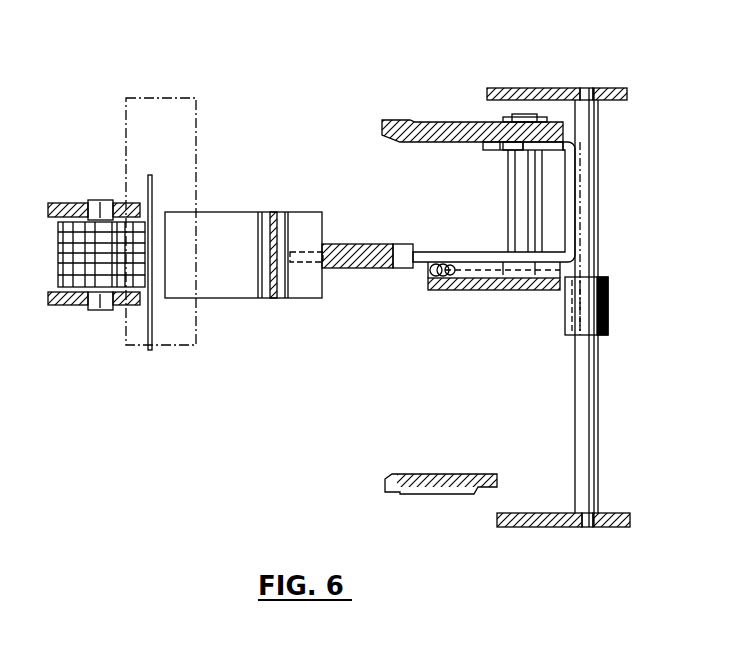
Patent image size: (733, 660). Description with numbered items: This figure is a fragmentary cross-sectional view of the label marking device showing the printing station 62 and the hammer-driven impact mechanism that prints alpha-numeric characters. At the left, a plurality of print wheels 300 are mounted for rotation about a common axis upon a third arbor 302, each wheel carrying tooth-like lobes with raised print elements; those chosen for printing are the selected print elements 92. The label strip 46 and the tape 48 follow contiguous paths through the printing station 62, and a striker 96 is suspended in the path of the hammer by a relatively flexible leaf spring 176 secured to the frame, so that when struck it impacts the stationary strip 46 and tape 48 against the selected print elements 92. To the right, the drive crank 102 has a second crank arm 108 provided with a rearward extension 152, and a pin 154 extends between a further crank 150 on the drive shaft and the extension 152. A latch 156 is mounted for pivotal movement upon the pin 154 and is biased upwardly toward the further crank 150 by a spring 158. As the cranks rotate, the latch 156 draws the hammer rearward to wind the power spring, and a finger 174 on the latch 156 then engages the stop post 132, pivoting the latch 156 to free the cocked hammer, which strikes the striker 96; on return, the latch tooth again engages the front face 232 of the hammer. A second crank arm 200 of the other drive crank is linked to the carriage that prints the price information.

The label strip 46 is at (153, 181).
The tape 48 is at (147, 183).
The printing station 62 is at (213, 102).
The selected print elements 92 is at (149, 256).
The striker 96 is at (221, 226).
The drive crank 102 is at (553, 124).
The second crank arm 108 is at (428, 100).
The stop post 132 is at (592, 257).
The further crank 150 is at (488, 285).
The rearward extension 152 is at (483, 122).
The pin 154 is at (524, 199).
The latch 156 is at (488, 252).
The spring 158 is at (428, 275).
The finger 174 is at (508, 148).
The leaf spring 176 is at (277, 220).
The second crank arm 200 is at (408, 488).
The front face 232 is at (318, 262).
The print wheels 300 is at (58, 266).
The third arbor 302 is at (96, 202).